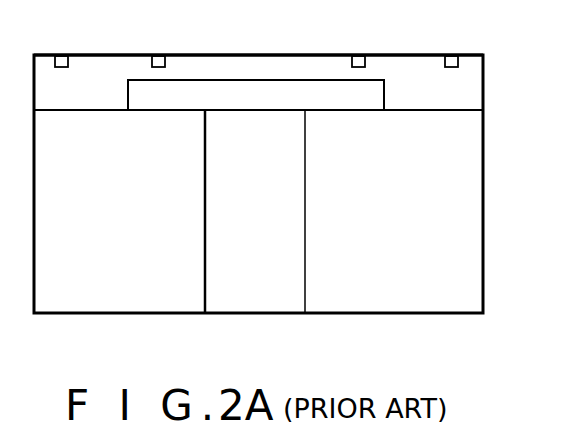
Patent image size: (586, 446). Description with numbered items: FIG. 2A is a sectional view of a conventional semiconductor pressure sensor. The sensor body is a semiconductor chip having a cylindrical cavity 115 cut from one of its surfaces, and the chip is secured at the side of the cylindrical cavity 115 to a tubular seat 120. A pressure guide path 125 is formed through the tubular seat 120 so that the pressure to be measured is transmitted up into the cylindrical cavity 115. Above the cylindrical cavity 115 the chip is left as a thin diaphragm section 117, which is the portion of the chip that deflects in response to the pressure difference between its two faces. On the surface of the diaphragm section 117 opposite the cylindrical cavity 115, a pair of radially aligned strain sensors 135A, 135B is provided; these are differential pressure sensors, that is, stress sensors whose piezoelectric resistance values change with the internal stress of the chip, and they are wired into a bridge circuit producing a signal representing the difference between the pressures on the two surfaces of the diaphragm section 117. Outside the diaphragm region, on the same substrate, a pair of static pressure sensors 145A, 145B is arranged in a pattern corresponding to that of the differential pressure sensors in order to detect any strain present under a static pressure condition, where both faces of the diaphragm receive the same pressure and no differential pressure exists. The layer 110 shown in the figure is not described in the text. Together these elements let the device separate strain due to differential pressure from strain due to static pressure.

The insulating layer 110 is at (473, 98).
The cylindrical cavity 115 is at (260, 102).
The diaphragm section 117 is at (260, 63).
The tubular seat 120 is at (473, 258).
The pressure guide path 125 is at (277, 298).
The strain sensor 135A is at (158, 56).
The strain sensor 135B is at (358, 56).
The static pressure sensor 145A is at (62, 56).
The static pressure sensor 145B is at (451, 56).